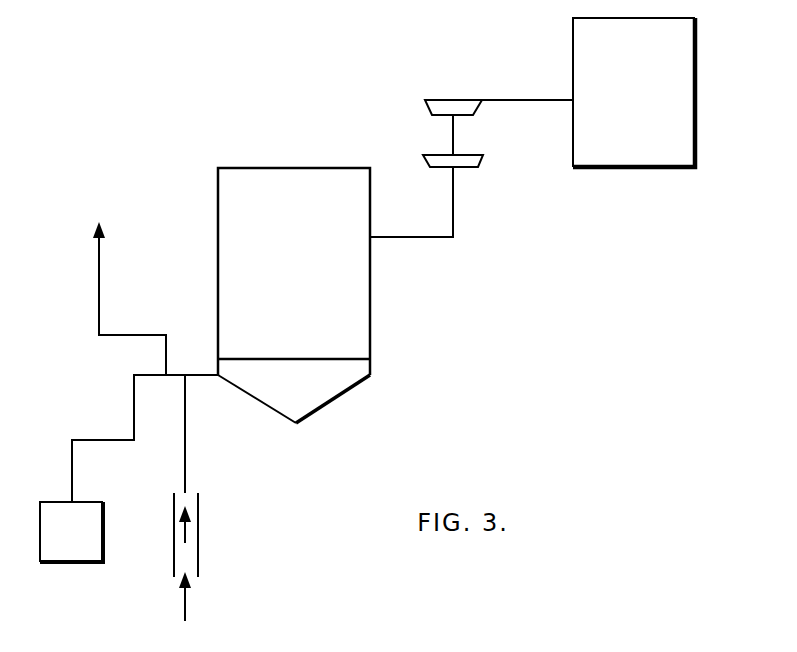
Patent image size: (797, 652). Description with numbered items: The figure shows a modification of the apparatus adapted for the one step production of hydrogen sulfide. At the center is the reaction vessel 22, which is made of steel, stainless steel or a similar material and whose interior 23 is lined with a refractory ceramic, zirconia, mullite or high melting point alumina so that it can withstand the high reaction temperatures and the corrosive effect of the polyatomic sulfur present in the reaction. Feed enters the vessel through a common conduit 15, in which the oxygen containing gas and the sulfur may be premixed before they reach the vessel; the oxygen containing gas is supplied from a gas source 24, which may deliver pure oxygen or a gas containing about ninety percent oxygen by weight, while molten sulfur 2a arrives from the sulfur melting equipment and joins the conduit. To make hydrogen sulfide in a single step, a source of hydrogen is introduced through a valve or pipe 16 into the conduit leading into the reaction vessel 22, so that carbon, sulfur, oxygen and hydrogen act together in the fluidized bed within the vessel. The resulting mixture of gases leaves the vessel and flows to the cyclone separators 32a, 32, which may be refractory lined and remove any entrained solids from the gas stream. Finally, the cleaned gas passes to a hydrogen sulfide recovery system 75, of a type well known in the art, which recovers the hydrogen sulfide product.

The reaction vessel 22 is at (296, 140).
The interior of reaction vessel 23 is at (299, 278).
The common conduit 15 is at (198, 378).
The molten sulfur 2a is at (149, 335).
The gas source 24 is at (59, 543).
The valve or pipe 16 is at (199, 512).
The cyclone separator 32a is at (468, 104).
The cyclone separator 32 is at (468, 162).
The hydrogen sulfide recovery system 75 is at (610, 102).